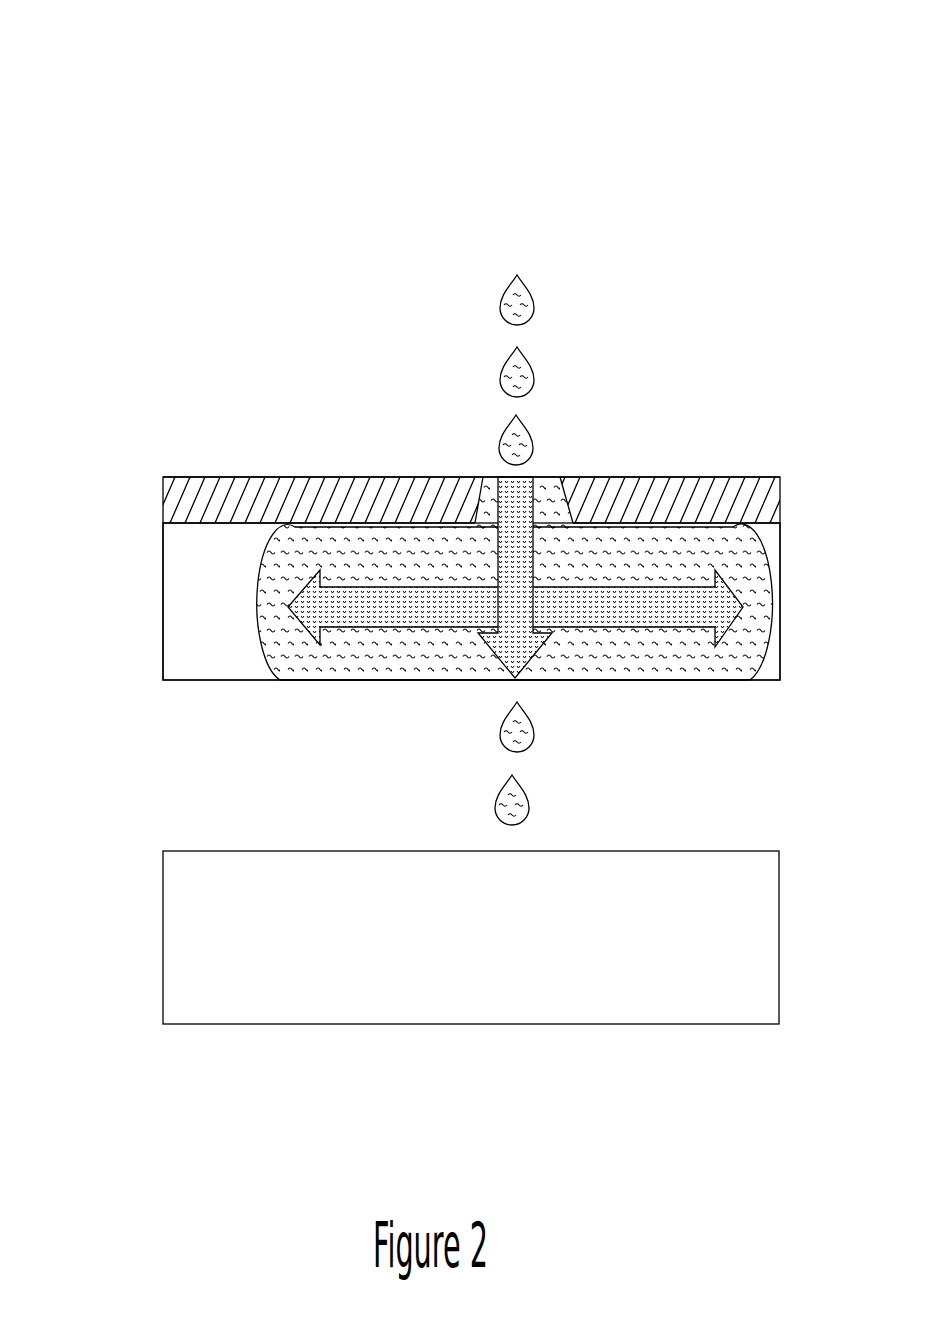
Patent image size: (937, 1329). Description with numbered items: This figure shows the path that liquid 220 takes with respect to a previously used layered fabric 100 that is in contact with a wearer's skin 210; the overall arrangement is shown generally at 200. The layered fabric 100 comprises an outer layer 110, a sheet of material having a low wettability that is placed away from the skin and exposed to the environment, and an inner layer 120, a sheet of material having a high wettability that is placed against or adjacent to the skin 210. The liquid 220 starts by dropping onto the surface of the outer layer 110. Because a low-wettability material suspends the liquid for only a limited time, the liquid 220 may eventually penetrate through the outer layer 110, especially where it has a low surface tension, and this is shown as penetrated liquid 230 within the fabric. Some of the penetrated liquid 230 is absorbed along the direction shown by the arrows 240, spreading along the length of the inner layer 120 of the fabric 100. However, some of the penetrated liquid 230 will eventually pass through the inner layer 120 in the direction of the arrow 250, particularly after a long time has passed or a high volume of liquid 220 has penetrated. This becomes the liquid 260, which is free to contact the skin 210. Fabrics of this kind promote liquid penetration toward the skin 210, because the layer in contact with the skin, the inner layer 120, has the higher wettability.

The droplet processing system 200 is at (180, 210).
The layered fabric 100 is at (317, 448).
The outer layer 110 is at (197, 503).
The inner layer 120 is at (193, 583).
The wearer's skin 210 is at (220, 905).
The liquid 220 is at (505, 427).
The penetrated liquid 230 is at (578, 525).
The arrows 240 is at (661, 598).
The arrow 250 is at (520, 515).
The liquid 260 is at (533, 733).